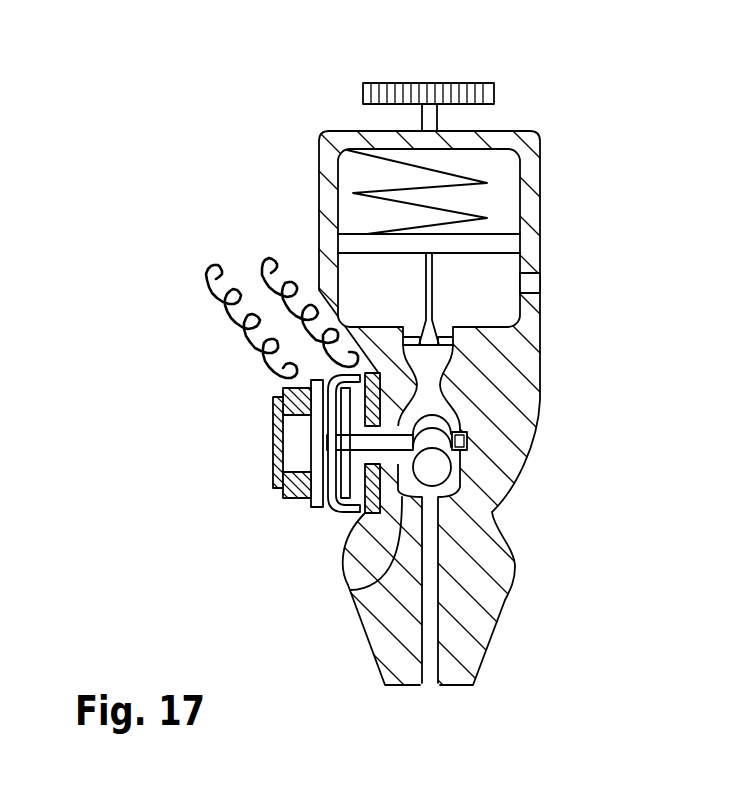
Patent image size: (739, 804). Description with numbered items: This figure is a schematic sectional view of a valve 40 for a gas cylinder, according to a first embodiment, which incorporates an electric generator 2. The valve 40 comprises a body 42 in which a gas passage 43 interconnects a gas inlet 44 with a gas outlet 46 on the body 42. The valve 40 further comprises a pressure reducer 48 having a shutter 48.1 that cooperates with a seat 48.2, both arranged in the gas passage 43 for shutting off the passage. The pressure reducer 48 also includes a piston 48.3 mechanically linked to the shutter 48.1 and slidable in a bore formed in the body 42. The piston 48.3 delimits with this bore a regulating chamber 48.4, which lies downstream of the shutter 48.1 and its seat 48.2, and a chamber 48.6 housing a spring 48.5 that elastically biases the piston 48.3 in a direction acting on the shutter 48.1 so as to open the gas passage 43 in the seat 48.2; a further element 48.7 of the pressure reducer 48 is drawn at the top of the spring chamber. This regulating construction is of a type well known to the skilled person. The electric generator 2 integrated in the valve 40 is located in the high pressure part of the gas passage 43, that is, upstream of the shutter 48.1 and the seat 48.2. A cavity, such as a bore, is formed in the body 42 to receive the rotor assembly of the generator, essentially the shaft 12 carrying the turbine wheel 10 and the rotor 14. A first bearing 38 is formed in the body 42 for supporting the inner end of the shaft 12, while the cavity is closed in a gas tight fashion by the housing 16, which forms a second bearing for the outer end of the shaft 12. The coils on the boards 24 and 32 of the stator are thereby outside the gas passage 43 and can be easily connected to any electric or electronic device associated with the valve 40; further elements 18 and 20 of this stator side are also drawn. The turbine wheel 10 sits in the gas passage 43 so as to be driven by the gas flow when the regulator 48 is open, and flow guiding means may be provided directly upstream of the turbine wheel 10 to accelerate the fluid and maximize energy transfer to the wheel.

The electric generator 2 is at (207, 425).
The turbine wheel 10 is at (493, 506).
The shaft 12 is at (350, 590).
The rotor 14 is at (343, 428).
The housing 16 is at (318, 519).
The retaining block 18 is at (290, 482).
The fastening element 20 is at (333, 444).
The board 24 is at (363, 515).
The board 32 is at (313, 378).
The first bearing 38 is at (327, 443).
The valve 40 is at (172, 143).
The body 42 is at (472, 583).
The gas passage 43 is at (432, 628).
The gas inlet 44 is at (427, 667).
The gas outlet 46 is at (540, 282).
The pressure reducer 48 is at (292, 192).
The shutter 48.1 is at (452, 345).
The seat 48.2 is at (413, 323).
The piston 48.3 is at (493, 242).
The regulating chamber 48.4 is at (488, 305).
The spring 48.5 is at (463, 175).
The chamber 48.6 is at (353, 176).
The adjusting knob 48.7 is at (402, 83).